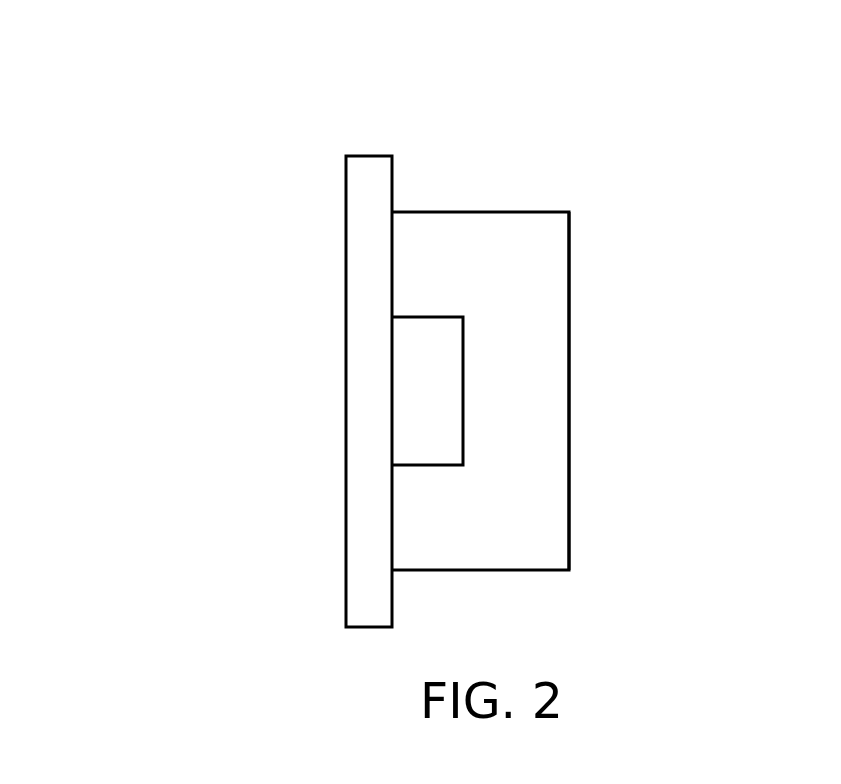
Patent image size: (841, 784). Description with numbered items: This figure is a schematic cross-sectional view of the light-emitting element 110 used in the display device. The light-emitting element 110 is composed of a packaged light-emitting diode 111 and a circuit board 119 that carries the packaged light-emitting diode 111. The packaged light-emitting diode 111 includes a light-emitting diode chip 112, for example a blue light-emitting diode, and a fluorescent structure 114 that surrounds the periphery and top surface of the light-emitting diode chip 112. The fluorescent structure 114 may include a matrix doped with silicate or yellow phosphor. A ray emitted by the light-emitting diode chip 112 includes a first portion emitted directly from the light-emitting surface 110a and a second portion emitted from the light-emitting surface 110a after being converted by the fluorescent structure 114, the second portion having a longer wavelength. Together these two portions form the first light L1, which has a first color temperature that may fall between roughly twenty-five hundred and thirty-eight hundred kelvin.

The light-emitting element 110 is at (684, 640).
The light-emitting surface 110a is at (569, 260).
The packaged light-emitting diode 111 is at (96, 41).
The light-emitting diode chip 112 is at (423, 408).
The fluorescent structure 114 is at (423, 273).
The circuit board 119 is at (369, 182).
The first light L1 is at (569, 392).